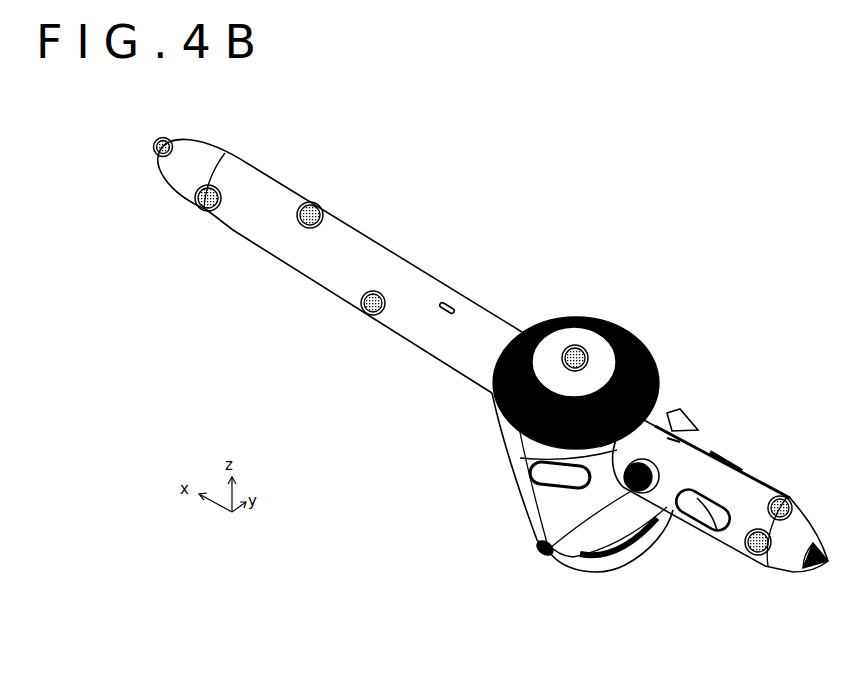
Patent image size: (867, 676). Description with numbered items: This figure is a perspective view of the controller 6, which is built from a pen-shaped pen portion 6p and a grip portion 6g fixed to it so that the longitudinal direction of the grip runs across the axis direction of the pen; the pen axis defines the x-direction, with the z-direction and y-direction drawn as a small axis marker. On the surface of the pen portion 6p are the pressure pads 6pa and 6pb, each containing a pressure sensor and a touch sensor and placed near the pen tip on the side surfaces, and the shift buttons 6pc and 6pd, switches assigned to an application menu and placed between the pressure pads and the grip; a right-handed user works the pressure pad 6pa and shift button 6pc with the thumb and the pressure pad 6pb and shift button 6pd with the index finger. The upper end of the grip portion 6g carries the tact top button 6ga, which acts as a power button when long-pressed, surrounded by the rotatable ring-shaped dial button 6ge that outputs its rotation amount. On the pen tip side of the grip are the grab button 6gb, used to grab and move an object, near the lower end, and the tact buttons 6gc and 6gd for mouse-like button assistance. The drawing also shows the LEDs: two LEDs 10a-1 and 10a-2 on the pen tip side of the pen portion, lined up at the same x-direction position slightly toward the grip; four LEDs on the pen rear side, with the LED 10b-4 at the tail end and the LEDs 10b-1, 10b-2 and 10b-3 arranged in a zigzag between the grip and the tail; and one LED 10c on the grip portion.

The controller 6 is at (481, 353).
The pen portion 6p is at (481, 346).
The pressure pad 6pa is at (745, 472).
The pressure pad 6pb is at (703, 518).
The shift button 6pc is at (693, 424).
The shift button 6pd is at (545, 550).
The grip portion 6g is at (580, 448).
The tact top button 6ga is at (605, 355).
The grab button 6gb is at (620, 564).
The tact button 6gc is at (658, 392).
The tact button 6gd is at (540, 476).
The dial button 6ge is at (647, 365).
The LED 10a-1 is at (783, 497).
The LED 10a-2 is at (757, 556).
The LED 10b-1 is at (368, 315).
The LED 10b-2 is at (312, 204).
The LED 10b-3 is at (205, 211).
The LED 10b-4 is at (165, 137).
The LED 10c is at (574, 347).